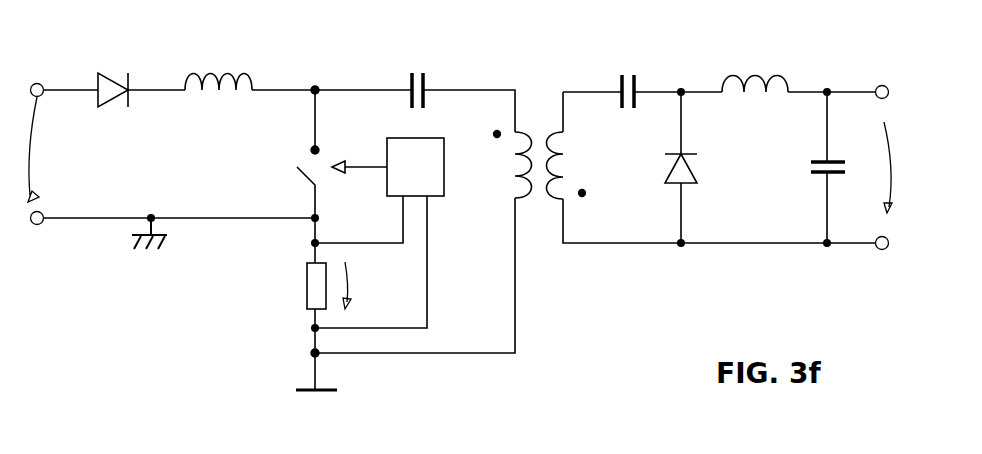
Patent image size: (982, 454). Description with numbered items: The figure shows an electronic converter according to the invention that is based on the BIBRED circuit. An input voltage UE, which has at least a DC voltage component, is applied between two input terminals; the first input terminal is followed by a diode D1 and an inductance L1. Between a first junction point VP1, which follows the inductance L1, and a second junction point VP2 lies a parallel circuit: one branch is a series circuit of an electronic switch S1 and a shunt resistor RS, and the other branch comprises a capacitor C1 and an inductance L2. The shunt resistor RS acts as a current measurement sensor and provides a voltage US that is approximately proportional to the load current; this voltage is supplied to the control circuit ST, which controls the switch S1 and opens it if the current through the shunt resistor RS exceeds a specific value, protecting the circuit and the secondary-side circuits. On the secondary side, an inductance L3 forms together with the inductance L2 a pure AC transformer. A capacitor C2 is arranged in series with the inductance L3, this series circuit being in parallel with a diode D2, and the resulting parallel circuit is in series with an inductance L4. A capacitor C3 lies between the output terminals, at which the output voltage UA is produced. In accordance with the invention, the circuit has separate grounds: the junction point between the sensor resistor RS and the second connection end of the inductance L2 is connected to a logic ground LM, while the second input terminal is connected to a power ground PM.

The diode D1 is at (115, 71).
The inductance L1 is at (218, 62).
The first junction point VP1 is at (315, 72).
The capacitor C1 is at (419, 74).
The electronic switch S1 is at (297, 154).
The control circuit ST is at (388, 167).
The inductance L2 is at (505, 165).
The inductance L3 is at (577, 165).
The capacitor C2 is at (626, 75).
The inductance L4 is at (755, 66).
The diode D2 is at (703, 168).
The capacitor C3 is at (808, 165).
The power ground PM is at (173, 238).
The shunt resistor RS is at (293, 286).
The second junction point VP2 is at (285, 354).
The logic ground LM is at (339, 389).
The input voltage UE is at (51, 149).
The voltage US is at (371, 285).
The output voltage UA is at (909, 167).